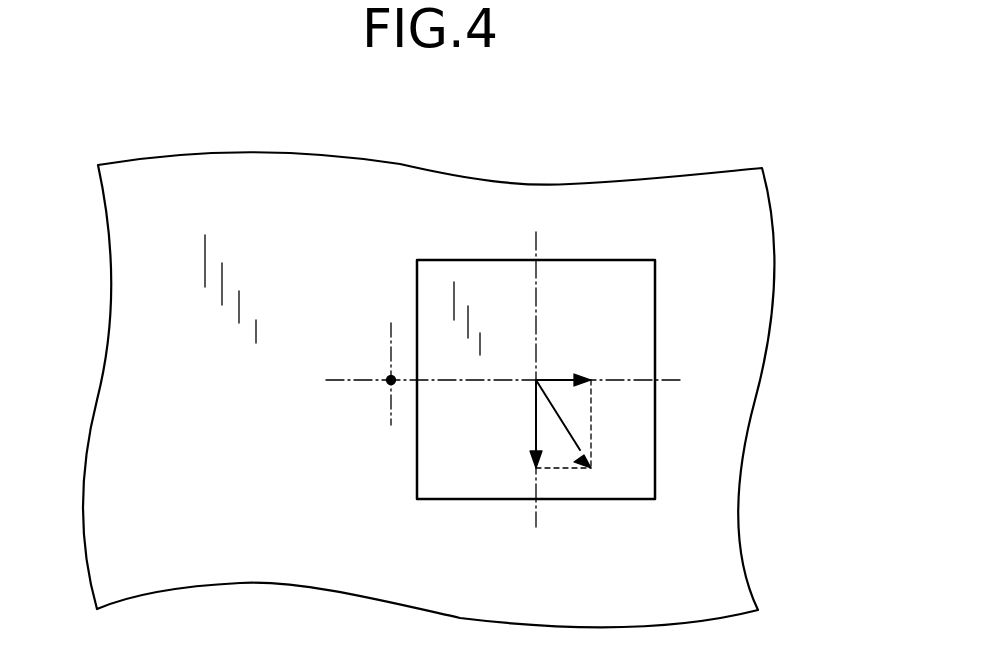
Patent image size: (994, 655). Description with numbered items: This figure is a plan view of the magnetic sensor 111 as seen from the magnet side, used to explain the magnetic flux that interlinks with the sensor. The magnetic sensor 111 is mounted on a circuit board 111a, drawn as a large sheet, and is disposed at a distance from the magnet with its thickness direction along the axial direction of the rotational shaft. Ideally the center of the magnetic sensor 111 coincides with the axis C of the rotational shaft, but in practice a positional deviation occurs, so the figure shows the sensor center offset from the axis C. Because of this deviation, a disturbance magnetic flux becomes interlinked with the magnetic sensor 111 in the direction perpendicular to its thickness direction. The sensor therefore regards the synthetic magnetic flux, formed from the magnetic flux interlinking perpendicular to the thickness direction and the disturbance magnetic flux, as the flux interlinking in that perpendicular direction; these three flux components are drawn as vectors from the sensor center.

The circuit board 111a is at (252, 152).
The magnetic sensor 111 is at (572, 260).
The axis of the rotational shaft C is at (389, 382).